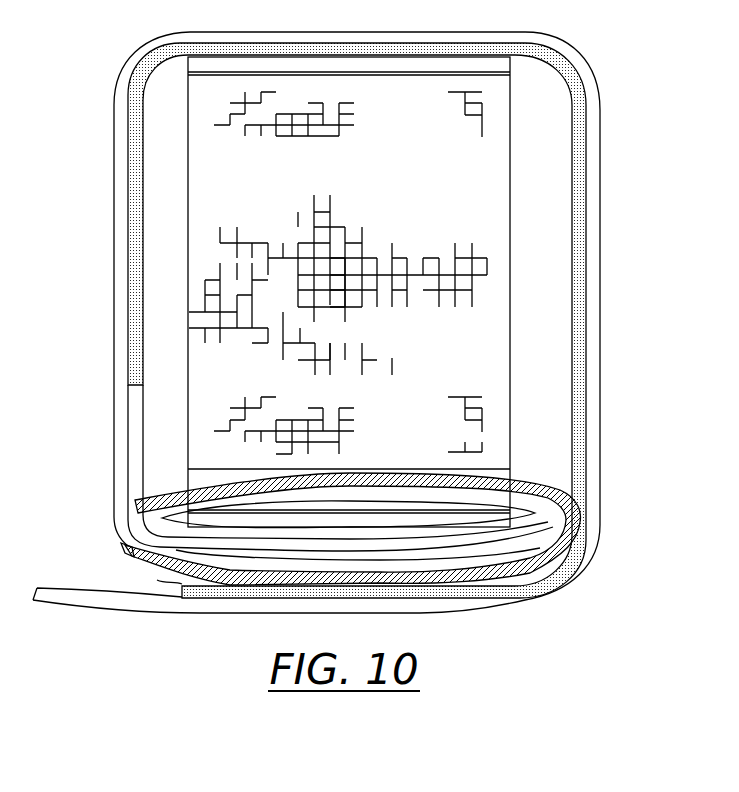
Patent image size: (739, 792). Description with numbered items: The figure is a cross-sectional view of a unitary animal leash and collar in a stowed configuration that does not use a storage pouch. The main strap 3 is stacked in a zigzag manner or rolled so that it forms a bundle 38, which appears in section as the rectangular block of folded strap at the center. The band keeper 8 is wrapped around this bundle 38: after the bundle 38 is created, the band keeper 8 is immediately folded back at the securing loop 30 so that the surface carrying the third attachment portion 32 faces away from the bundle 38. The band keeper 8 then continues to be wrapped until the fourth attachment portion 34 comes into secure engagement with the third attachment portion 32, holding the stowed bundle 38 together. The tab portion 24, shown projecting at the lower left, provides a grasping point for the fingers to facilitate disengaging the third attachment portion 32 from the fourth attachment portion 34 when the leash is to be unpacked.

The main strap 3 is at (528, 64).
The band keeper 8 is at (600, 211).
The tab portion 24 is at (108, 614).
The securing loop 30 is at (513, 503).
The third attachment portion 32 is at (130, 546).
The fourth attachment portion 34 is at (157, 580).
The bundle 38 is at (510, 272).